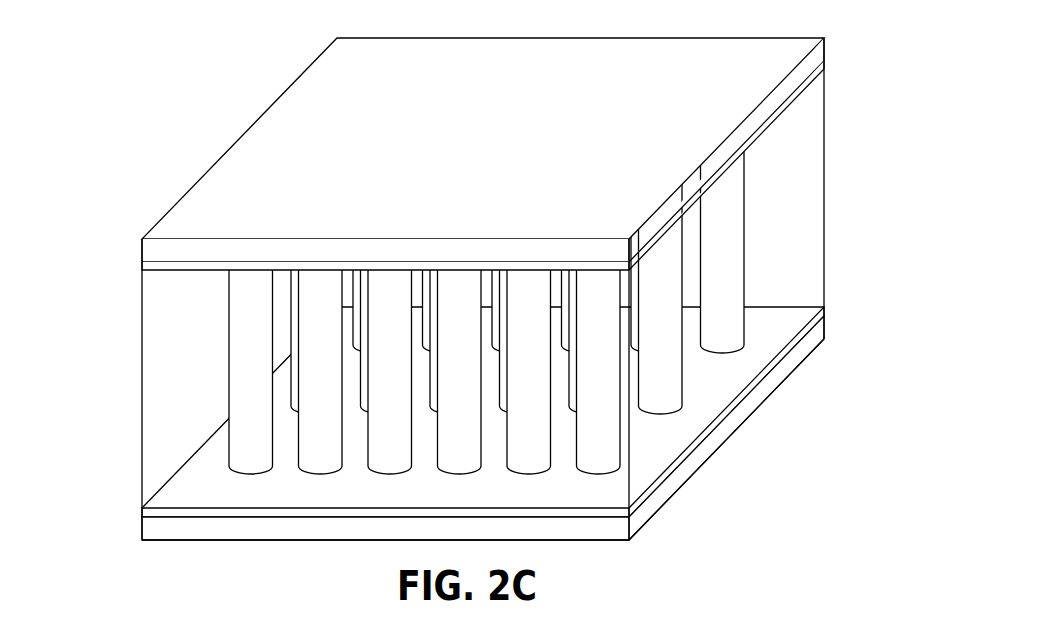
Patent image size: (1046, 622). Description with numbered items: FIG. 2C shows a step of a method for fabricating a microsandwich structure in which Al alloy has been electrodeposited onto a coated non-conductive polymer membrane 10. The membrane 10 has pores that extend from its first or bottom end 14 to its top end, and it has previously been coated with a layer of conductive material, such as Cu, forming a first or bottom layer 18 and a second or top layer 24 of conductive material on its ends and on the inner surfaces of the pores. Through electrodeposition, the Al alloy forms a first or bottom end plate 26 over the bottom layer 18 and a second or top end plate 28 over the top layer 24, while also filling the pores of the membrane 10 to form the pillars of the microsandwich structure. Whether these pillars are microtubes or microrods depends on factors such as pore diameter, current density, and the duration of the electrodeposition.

The non-conductive polymer membrane 10 is at (472, 289).
The bottom end 14 is at (665, 480).
The bottom layer 18 is at (716, 425).
The top layer 24 is at (752, 140).
The bottom end plate 26 is at (777, 377).
The top end plate 28 is at (797, 79).